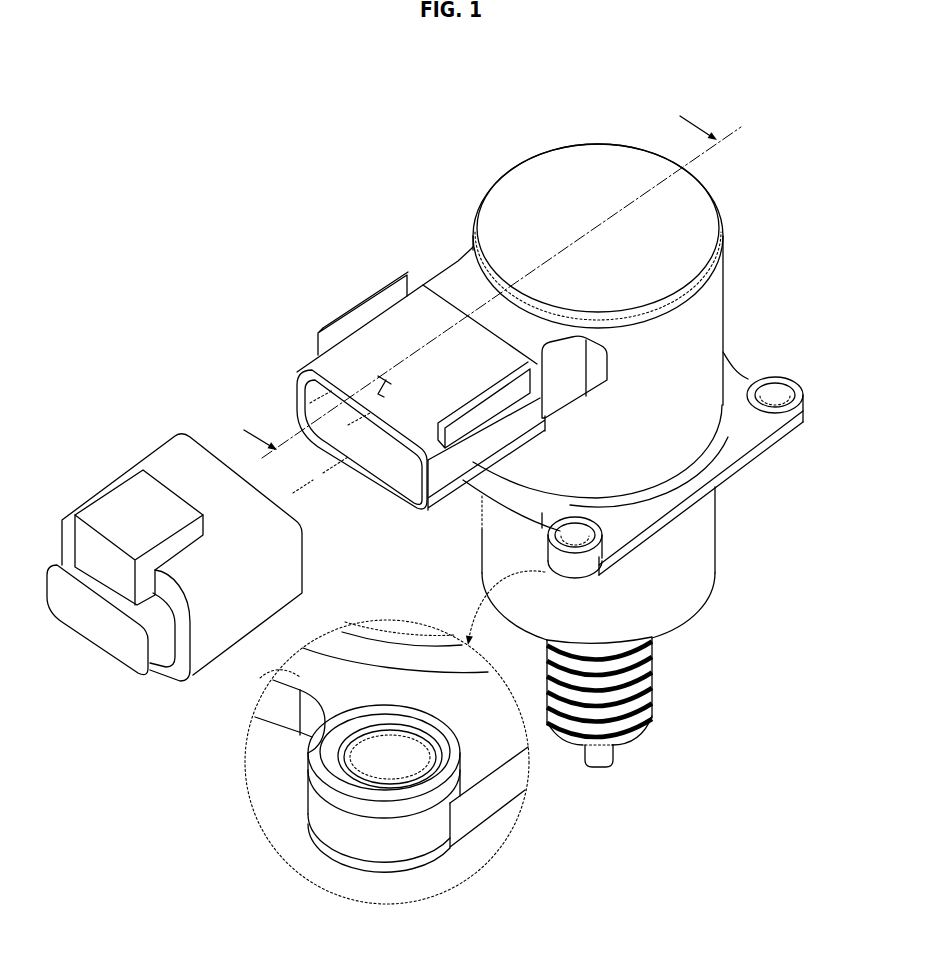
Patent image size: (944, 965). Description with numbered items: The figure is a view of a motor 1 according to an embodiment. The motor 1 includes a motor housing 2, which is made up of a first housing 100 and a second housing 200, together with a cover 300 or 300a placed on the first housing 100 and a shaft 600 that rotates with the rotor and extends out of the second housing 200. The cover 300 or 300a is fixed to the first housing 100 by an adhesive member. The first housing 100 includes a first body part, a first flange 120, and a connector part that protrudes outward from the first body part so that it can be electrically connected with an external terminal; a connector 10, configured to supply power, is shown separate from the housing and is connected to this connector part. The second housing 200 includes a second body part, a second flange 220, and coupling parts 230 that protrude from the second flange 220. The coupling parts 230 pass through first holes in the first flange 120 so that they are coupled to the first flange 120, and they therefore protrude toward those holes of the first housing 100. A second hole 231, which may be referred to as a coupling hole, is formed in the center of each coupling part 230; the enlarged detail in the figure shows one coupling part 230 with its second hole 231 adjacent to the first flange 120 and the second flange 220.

The motor 1 is at (179, 81).
The motor housing 2 is at (826, 272).
The connector 10 is at (144, 437).
The first housing 100 is at (703, 328).
The first flange 120 is at (277, 683).
The second housing 200 is at (703, 545).
The second flange 220 is at (353, 857).
The coupling part 230 is at (477, 773).
The second hole 231 is at (373, 760).
The cover 300 is at (450, 295).
The cover 300a is at (543, 178).
The shaft 600 is at (603, 755).